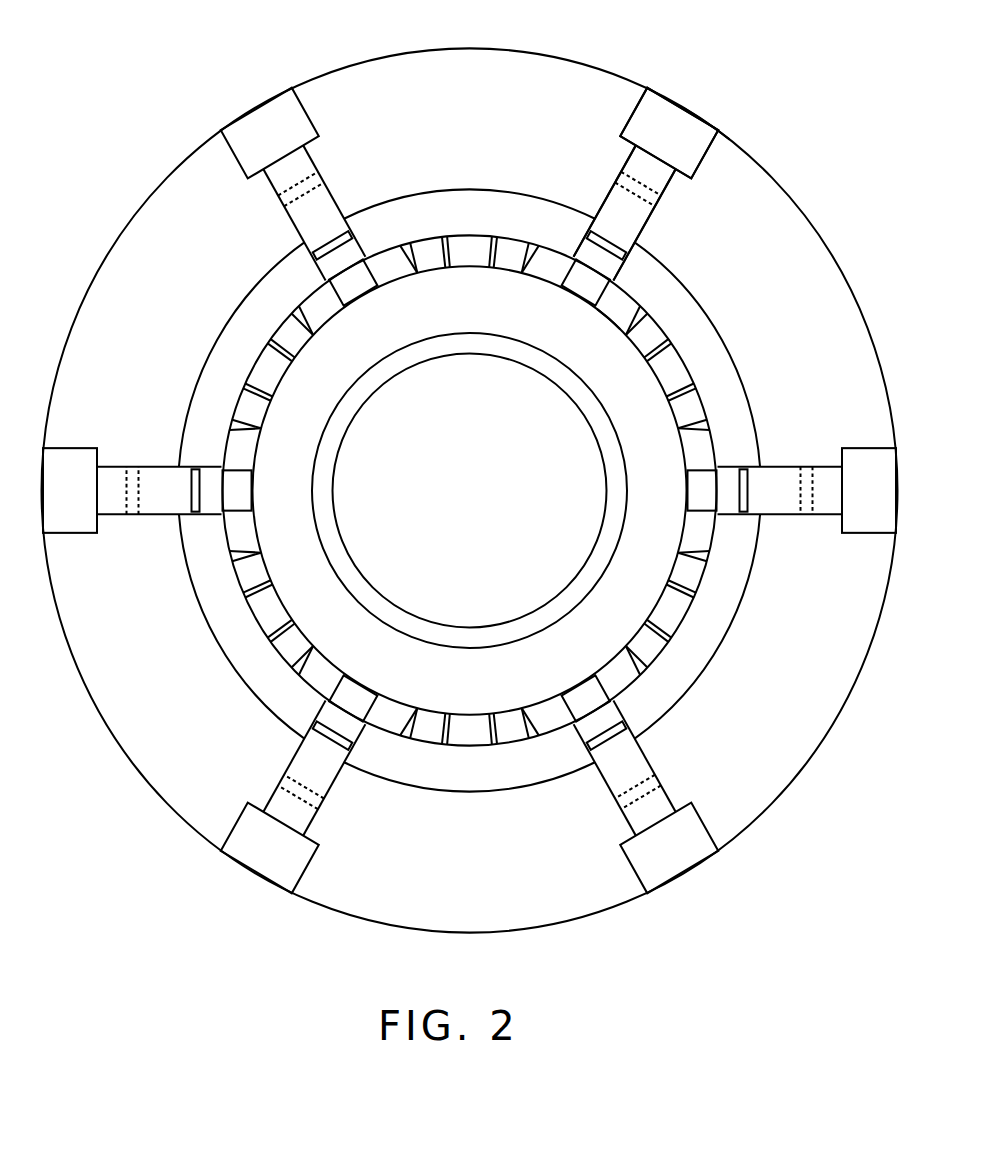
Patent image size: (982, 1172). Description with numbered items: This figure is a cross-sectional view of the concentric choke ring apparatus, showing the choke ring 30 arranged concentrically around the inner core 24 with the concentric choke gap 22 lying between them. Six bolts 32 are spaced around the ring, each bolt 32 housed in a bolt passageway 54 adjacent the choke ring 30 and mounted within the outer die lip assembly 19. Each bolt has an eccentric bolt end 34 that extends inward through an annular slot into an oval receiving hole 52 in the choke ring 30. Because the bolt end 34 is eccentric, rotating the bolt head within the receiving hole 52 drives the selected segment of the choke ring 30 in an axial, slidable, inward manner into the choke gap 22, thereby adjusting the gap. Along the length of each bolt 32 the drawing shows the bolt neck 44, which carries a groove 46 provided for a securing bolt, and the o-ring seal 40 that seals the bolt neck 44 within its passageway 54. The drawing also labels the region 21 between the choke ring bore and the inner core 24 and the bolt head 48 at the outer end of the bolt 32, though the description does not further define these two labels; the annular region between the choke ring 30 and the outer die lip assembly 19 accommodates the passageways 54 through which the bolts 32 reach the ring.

The outer die lip assembly 19 is at (545, 45).
The rotor 21 is at (471, 324).
The concentric choke gap 22 is at (489, 224).
The inner core 24 is at (479, 484).
The choke ring 30 is at (650, 367).
The bolt 32 is at (662, 106).
The eccentric bolt end 34 is at (582, 300).
The o-ring seal 40 is at (627, 258).
The bolt neck 44 is at (670, 181).
The groove 46 is at (627, 178).
The bolt head 48 is at (691, 147).
The oval receiving hole 52 is at (614, 311).
The bolt passageway 54 is at (722, 138).